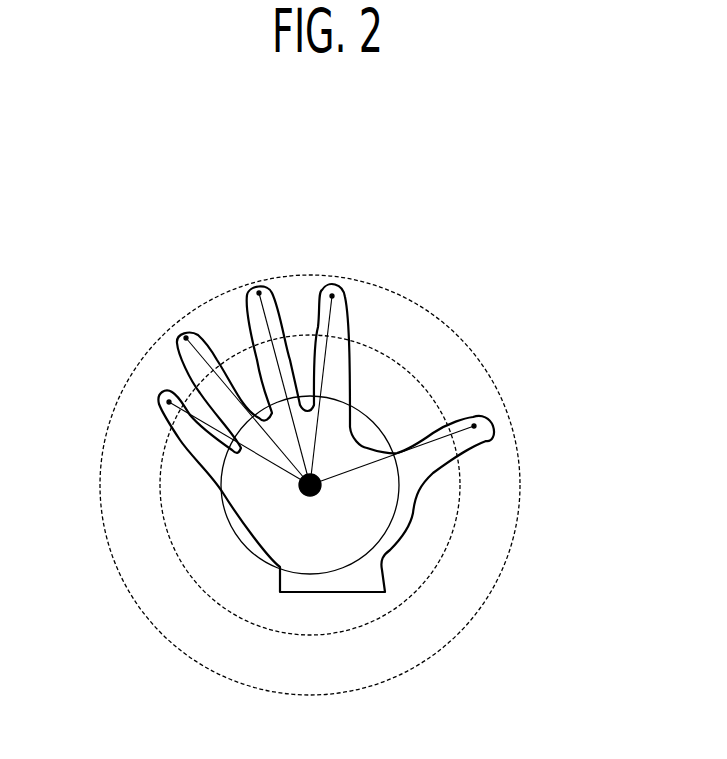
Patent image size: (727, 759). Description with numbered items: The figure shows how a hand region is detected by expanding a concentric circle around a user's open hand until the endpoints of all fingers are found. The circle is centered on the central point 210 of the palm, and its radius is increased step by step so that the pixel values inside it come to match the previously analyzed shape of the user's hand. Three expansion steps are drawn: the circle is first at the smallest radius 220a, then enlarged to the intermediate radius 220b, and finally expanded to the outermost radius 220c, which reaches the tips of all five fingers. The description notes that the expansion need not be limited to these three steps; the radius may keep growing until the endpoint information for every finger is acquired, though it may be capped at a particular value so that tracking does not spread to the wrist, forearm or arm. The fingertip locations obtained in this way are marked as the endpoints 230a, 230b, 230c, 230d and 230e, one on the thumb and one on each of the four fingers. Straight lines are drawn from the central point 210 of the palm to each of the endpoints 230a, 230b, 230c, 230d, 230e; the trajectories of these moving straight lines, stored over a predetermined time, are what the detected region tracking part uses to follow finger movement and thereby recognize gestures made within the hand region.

The central point of the palm 210 is at (310, 496).
The concentric circle at first radius 220a is at (263, 562).
The concentric circle at second radius 220b is at (312, 635).
The concentric circle at third radius 220c is at (365, 690).
The endpoint of finger 230a is at (474, 426).
The endpoint of finger 230b is at (332, 296).
The endpoint of finger 230c is at (259, 292).
The endpoint of finger 230d is at (186, 338).
The endpoint of finger 230e is at (169, 402).